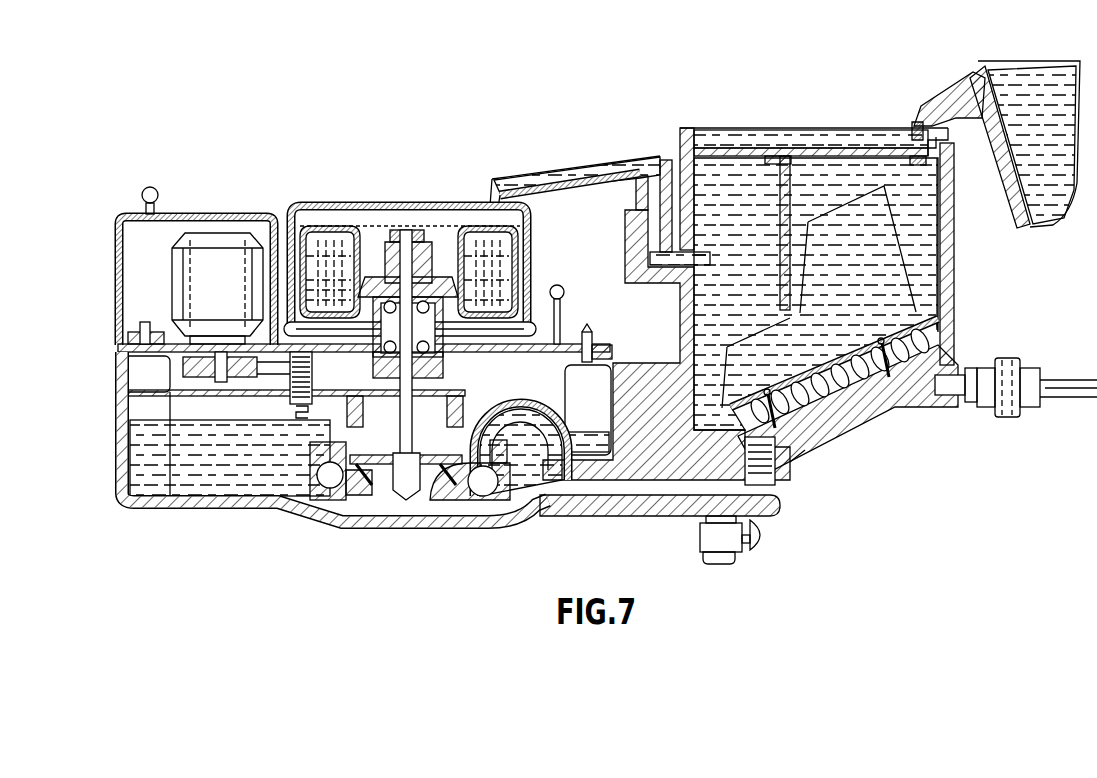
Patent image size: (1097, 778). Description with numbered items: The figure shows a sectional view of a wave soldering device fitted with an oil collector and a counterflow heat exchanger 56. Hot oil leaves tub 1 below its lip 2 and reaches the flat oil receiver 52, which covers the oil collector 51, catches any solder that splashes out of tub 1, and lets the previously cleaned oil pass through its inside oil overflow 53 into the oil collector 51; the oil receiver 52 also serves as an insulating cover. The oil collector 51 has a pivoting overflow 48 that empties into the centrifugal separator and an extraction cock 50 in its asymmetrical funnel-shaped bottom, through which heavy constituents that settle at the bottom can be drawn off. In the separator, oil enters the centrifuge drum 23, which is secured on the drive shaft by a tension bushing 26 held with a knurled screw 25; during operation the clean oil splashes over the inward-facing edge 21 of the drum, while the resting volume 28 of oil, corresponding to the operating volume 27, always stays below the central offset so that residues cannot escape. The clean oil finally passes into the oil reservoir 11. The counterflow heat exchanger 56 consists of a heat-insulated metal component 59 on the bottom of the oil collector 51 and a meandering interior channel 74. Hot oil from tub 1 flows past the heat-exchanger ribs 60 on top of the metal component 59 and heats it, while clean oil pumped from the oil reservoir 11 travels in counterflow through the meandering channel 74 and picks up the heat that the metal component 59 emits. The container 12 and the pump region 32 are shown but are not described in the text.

The tub 1 is at (1007, 197).
The lip 2 is at (937, 103).
The oil reservoir 11 is at (490, 522).
The fluid container 12 is at (1022, 117).
The inward-facing edge 21 is at (293, 204).
The centrifuge drum 23 is at (514, 250).
The knurled screw 25 is at (400, 228).
The tension bushing 26 is at (390, 236).
The operating volume 27 is at (330, 249).
The resting volume 28 is at (339, 270).
The pump impeller 32 is at (342, 497).
The pivoting overflow 48 is at (552, 183).
The extraction cock 50 is at (767, 544).
The oil collector 51 is at (955, 273).
The oil receiver 52 is at (788, 156).
The oil overflow 53 is at (913, 126).
The counterflow heat exchanger 56 is at (815, 452).
The metal component 59 is at (868, 406).
The heat-exchanger ribs 60 is at (952, 248).
The meandering interior channel 74 is at (831, 398).